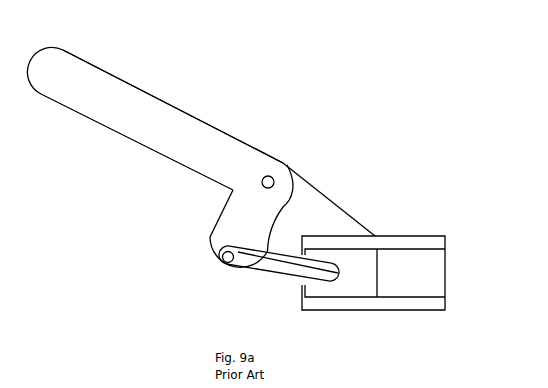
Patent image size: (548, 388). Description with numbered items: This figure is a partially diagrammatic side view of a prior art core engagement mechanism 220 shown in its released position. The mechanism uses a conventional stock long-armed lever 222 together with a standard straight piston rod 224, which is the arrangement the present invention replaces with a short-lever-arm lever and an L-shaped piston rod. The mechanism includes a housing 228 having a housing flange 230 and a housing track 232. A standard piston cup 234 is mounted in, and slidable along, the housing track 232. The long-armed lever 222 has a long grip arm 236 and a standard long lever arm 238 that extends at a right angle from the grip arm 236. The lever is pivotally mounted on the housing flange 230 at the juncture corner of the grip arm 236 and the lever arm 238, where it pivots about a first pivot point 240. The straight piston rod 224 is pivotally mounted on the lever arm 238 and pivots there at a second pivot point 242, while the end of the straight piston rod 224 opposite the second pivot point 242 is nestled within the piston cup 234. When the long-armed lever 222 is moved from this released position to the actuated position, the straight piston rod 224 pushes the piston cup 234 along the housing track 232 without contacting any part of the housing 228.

The prior art core engagement mechanism 220 is at (342, 98).
The long-armed lever 222 is at (112, 130).
The straight piston rod 224 is at (266, 276).
The housing 228 is at (400, 236).
The housing flange 230 is at (340, 207).
The housing track 232 is at (440, 236).
The piston cup 234 is at (378, 281).
The grip arm 236 is at (100, 70).
The lever arm 238 is at (220, 217).
The first pivot point 240 is at (270, 177).
The second pivot point 242 is at (207, 257).